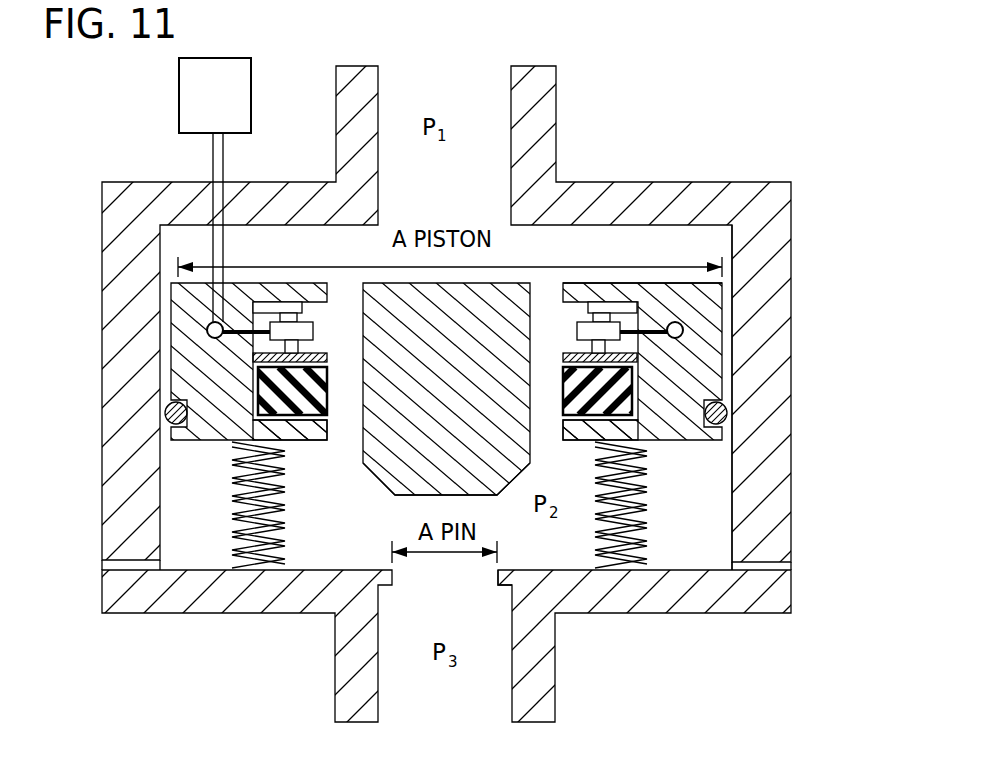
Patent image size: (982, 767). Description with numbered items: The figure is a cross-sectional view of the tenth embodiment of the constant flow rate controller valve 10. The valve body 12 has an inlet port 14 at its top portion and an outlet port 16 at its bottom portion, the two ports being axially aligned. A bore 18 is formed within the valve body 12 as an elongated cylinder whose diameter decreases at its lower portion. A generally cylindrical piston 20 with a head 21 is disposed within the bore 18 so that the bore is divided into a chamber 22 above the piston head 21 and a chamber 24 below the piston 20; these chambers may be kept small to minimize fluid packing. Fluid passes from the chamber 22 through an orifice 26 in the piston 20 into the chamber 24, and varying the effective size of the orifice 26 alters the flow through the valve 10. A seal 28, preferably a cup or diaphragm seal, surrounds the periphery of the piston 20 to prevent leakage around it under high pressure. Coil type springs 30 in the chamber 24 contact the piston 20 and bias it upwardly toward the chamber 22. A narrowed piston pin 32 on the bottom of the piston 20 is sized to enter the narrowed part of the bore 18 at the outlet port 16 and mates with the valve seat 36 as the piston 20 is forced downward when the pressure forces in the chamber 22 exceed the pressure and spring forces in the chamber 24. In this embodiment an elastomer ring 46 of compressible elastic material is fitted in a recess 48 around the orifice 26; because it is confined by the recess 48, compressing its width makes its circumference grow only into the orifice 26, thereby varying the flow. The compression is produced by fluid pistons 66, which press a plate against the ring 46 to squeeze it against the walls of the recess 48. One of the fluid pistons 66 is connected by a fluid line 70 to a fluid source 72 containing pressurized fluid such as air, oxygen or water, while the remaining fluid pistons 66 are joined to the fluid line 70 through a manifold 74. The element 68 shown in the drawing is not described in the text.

The constant flow rate controller valve 10 is at (652, 106).
The valve body 12 is at (570, 182).
The inlet port 14 is at (487, 97).
The outlet port 16 is at (483, 703).
The bore 18 is at (723, 377).
The piston 20 is at (692, 303).
The head 21 is at (627, 283).
The chamber 22 is at (700, 238).
The chamber 24 is at (710, 530).
The orifice 26 is at (347, 433).
The seal 28 is at (727, 423).
The springs 30 is at (233, 493).
The piston pin 32 is at (380, 477).
The valve seat 36 is at (498, 585).
The elastomer ring 46 is at (258, 393).
The recess 48 is at (250, 417).
The fluid pistons 66 is at (327, 288).
The armature plate 68 is at (240, 358).
The fluid line 70 is at (207, 238).
The fluid source 72 is at (179, 92).
The manifold 74 is at (683, 330).